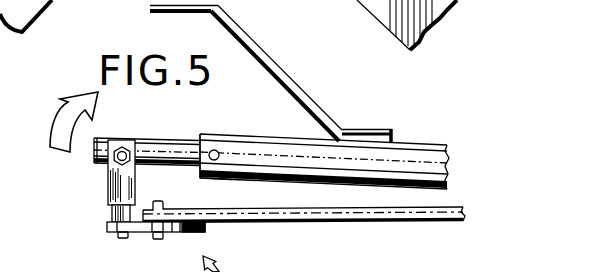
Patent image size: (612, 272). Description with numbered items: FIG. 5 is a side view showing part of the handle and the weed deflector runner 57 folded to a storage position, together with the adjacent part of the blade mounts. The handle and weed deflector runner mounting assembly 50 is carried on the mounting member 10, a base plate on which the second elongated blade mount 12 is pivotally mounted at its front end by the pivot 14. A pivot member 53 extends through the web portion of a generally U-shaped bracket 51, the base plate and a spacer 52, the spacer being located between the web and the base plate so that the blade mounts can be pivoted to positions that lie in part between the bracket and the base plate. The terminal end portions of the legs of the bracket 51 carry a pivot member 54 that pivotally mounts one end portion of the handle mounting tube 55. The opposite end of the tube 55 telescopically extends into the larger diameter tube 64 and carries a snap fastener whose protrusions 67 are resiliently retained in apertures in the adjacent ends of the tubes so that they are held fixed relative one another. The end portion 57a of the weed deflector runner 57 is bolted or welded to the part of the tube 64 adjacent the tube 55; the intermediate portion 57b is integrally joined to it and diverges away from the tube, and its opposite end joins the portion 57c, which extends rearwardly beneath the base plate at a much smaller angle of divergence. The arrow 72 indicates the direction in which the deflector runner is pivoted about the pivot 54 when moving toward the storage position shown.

The mounting member 10 is at (206, 225).
The second elongated blade mount 12 is at (350, 215).
The pivot 14 is at (158, 239).
The handle and weed deflector runner mounting assembly 50 is at (163, 140).
The U-shaped bracket 51 is at (122, 180).
The spacer 52 is at (118, 215).
The pivot member 53 is at (120, 237).
The pivot member 54 is at (123, 147).
The handle mounting tube 55 is at (188, 145).
The weed deflector runner 57 is at (271, 74).
The end portion 57a is at (378, 128).
The intermediate portion 57b is at (318, 107).
The portion 57c is at (177, 12).
The tube 64 is at (324, 142).
The protrusions 67 is at (218, 151).
The arrow 72 is at (62, 110).